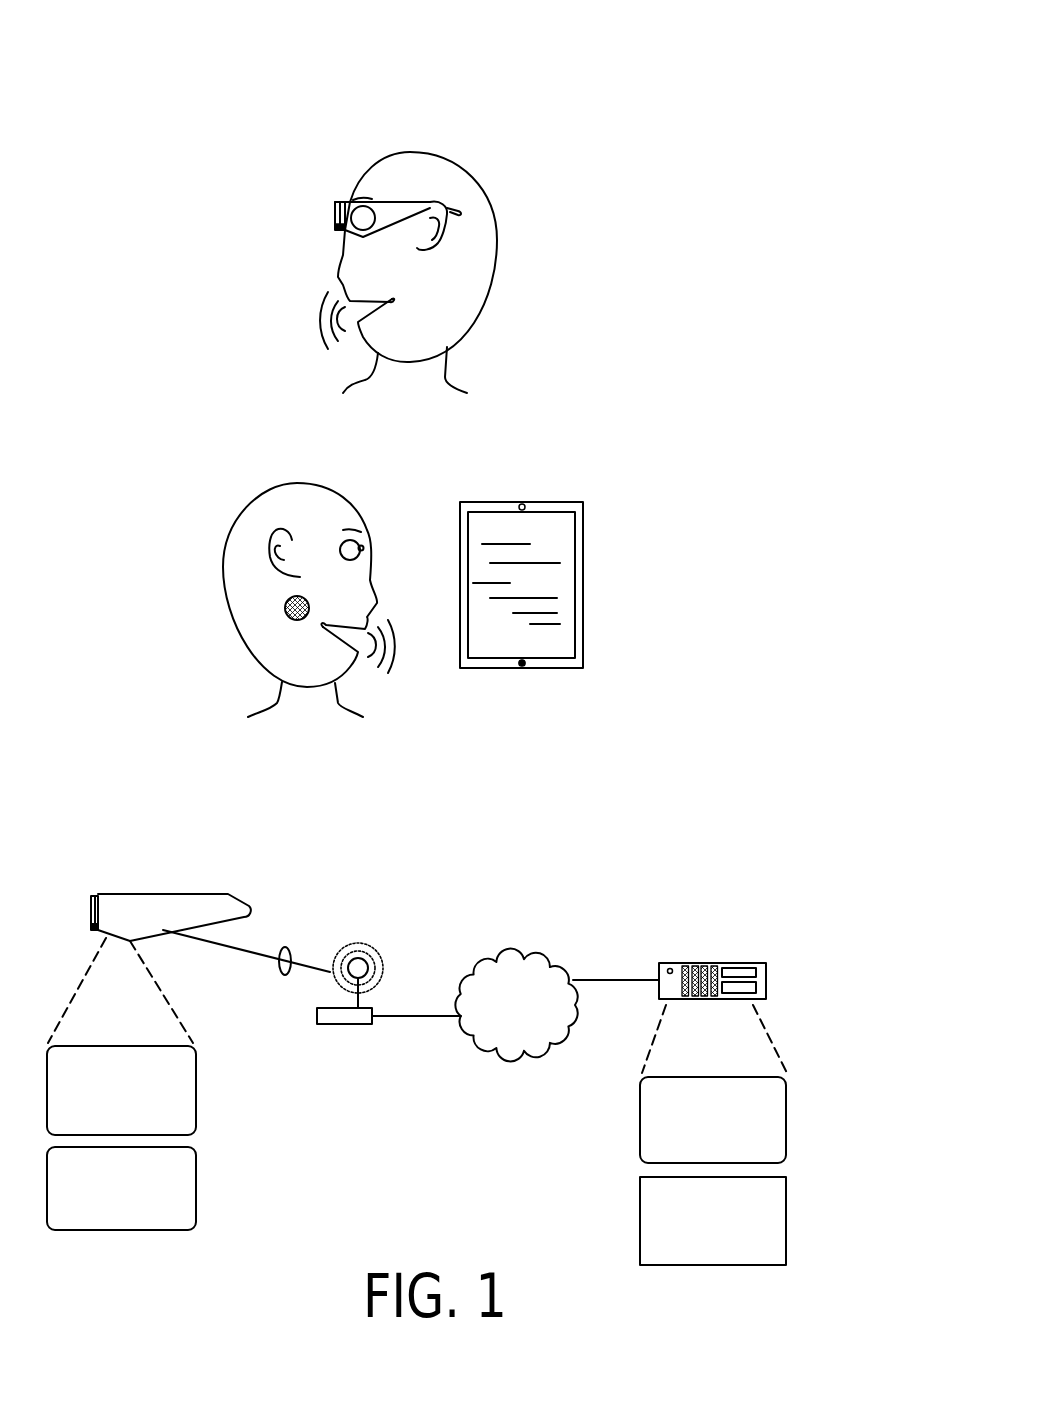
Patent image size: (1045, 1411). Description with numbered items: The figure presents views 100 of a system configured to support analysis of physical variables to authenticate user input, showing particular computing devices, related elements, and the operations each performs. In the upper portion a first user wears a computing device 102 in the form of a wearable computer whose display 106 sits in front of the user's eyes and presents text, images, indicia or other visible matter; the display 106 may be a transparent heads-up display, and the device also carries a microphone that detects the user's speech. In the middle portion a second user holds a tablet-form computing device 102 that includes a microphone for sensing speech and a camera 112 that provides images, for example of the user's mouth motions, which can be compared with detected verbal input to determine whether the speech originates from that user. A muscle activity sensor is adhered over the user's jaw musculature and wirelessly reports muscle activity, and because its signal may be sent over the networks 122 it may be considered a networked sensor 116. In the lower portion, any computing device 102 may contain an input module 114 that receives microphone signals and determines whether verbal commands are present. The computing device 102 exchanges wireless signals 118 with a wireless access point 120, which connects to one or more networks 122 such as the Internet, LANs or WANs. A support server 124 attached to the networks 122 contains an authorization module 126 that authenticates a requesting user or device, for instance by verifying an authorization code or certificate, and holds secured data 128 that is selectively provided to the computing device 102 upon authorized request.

The views 100 is at (706, 50).
The display 106 is at (338, 202).
The camera 112 is at (523, 503).
The computing device 102 is at (143, 893).
The input module 114 is at (137, 1126).
The networked sensor 116 is at (137, 1212).
The wireless signals 118 is at (286, 946).
The wireless access point 120 is at (332, 1024).
The networks 122 is at (532, 1030).
The support server 124 is at (683, 962).
The authorization module 126 is at (727, 1156).
The secured data 128 is at (727, 1256).